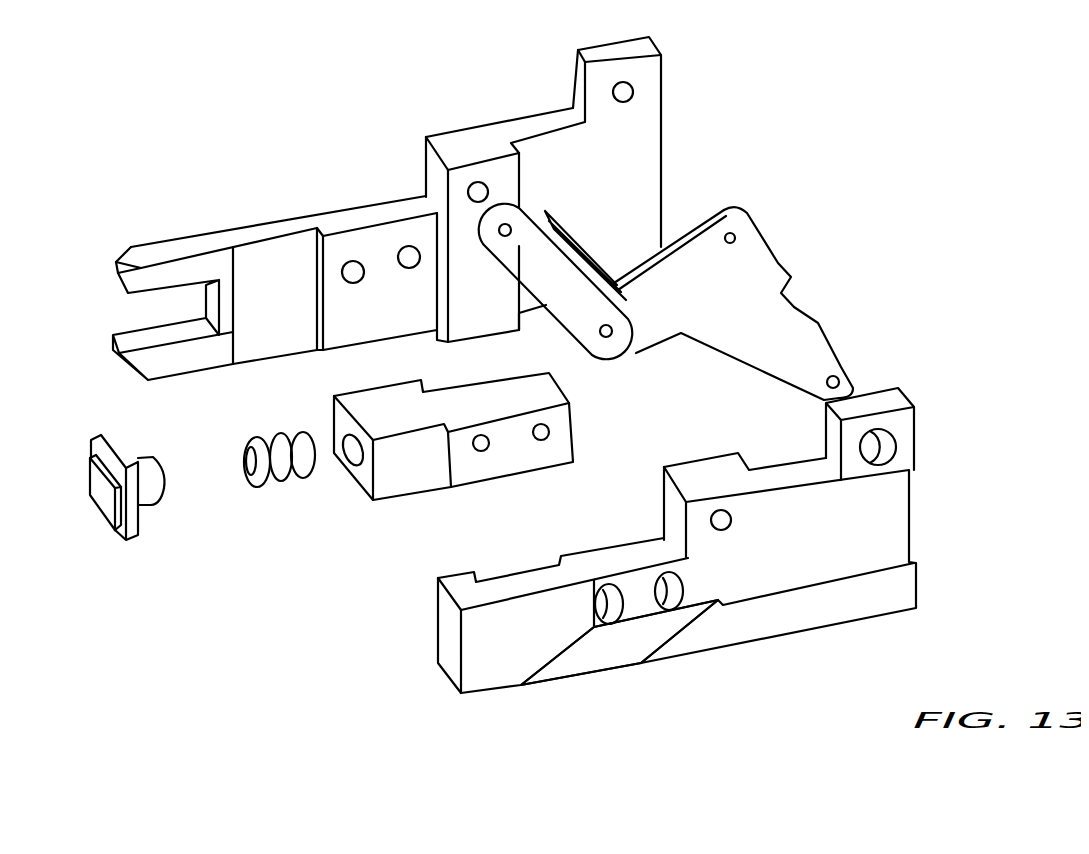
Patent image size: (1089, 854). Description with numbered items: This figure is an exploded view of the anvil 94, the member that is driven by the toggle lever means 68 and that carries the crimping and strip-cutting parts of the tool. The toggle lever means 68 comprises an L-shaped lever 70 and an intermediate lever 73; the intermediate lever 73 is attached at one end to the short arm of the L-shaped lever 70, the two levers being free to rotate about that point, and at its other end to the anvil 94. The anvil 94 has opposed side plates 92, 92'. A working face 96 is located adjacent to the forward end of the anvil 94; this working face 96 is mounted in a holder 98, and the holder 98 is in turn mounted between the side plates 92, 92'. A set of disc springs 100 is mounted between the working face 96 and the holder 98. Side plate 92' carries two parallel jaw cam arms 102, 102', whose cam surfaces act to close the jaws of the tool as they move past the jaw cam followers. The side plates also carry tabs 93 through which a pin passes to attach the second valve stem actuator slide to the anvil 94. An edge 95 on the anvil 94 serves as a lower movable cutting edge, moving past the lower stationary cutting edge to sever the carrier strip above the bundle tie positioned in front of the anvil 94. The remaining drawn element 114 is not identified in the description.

The anvil 94 is at (265, 158).
The side plate 92 is at (269, 274).
The jaw cam arm 102 is at (116, 291).
The jaw cam arm 102' is at (123, 364).
The tab 93 is at (636, 65).
The intermediate lever 73 is at (593, 252).
The L-shaped lever 70 is at (726, 228).
The toggle lever means 68 is at (733, 273).
The edge 95 is at (326, 389).
The holder 98 is at (391, 482).
The working face 96 is at (88, 480).
The set of disc springs 100 is at (270, 475).
The side plate 92' is at (677, 549).
The inclined surface 114 is at (676, 615).